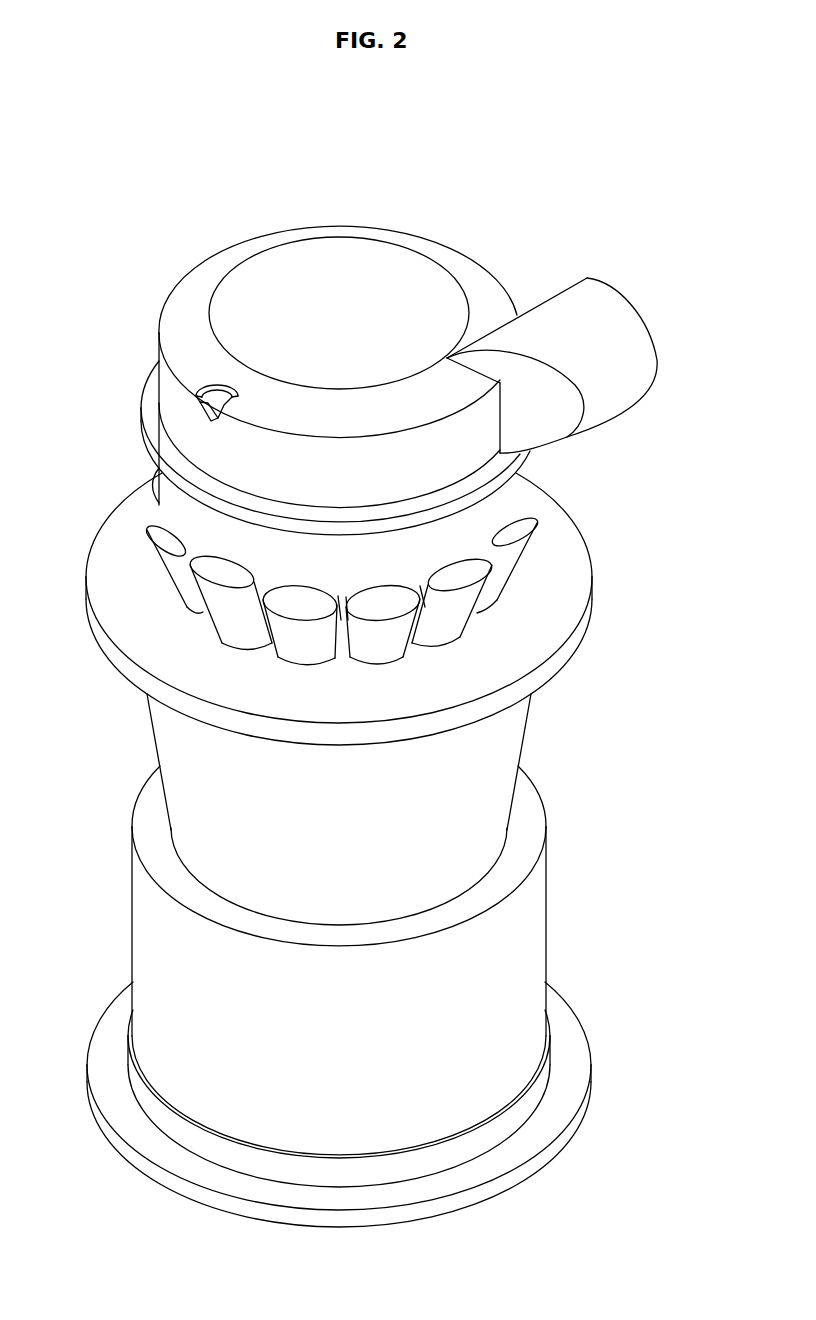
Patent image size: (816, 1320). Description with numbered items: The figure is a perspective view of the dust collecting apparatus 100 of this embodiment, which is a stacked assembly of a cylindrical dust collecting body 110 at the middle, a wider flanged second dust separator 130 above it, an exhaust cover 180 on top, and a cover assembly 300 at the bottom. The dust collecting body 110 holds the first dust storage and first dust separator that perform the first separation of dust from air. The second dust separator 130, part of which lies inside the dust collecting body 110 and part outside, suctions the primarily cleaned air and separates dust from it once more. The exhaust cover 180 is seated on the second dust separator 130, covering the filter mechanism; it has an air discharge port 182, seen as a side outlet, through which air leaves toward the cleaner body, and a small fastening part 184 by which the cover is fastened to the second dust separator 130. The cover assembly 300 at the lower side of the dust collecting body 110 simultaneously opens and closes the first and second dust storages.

The dust collecting apparatus 100 is at (489, 170).
The dust collecting body 110 is at (540, 822).
The second dust separator 130 is at (558, 534).
The exhaust cover 180 is at (342, 255).
The air discharge port 182 is at (612, 315).
The fastening part 184 is at (195, 402).
The cover assembly 300 is at (597, 988).